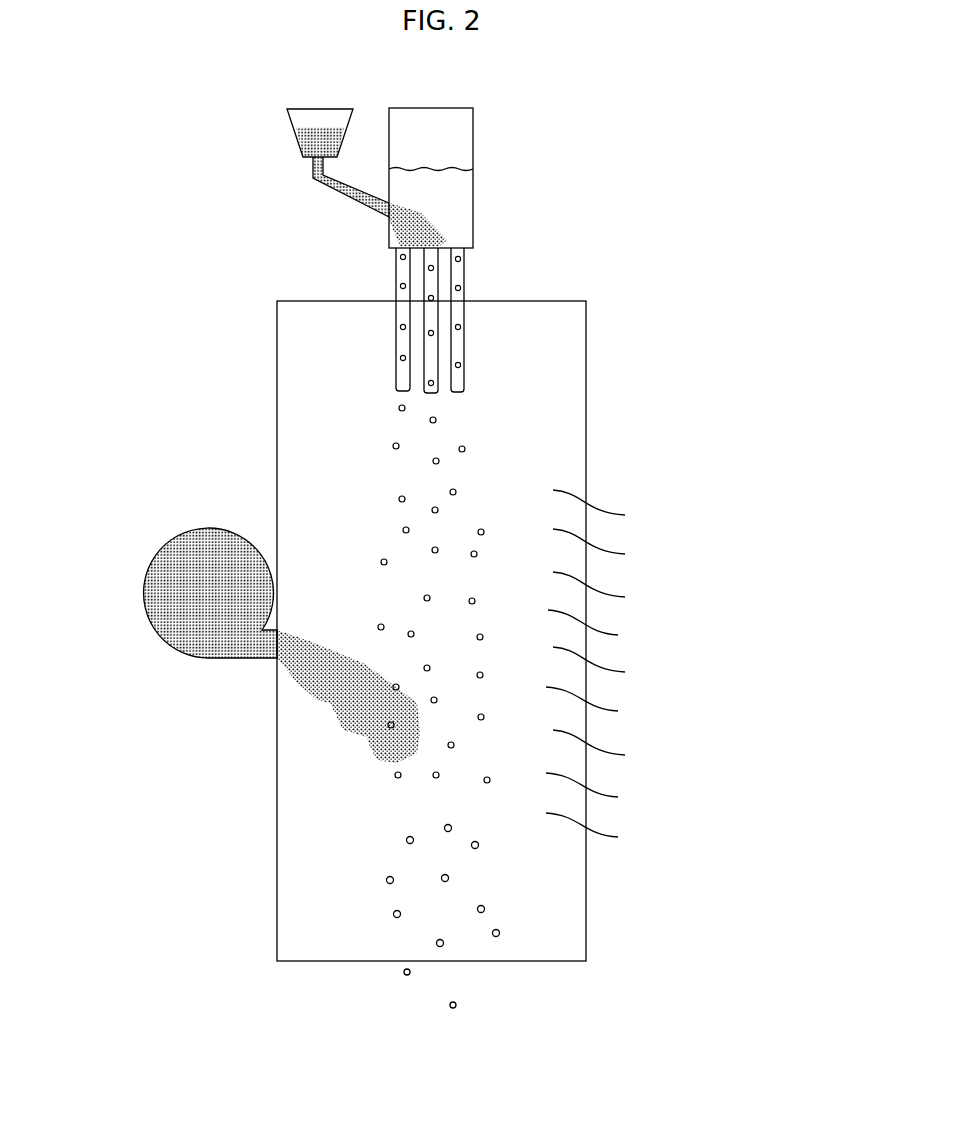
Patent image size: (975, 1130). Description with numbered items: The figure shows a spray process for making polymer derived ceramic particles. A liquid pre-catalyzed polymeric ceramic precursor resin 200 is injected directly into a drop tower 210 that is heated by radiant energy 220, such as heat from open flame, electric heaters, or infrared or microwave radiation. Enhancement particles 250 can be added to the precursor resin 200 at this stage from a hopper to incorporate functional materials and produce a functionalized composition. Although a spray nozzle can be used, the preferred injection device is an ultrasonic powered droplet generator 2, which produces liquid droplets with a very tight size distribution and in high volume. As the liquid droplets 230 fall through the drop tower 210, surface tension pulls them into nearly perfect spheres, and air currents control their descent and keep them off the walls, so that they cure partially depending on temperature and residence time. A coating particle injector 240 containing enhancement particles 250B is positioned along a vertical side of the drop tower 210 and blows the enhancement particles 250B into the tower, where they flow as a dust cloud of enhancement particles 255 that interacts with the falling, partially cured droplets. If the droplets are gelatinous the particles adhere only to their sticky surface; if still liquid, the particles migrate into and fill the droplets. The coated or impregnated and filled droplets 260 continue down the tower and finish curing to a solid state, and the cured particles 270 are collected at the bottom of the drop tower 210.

The ultrasonic powered droplet generator 2 is at (463, 282).
The liquid pre-catalyzed polymeric ceramic precursor resin 200 is at (437, 159).
The drop tower 210 is at (268, 350).
The radiant energy 220 is at (637, 588).
The liquid droplets 230 is at (470, 442).
The coating particle injector 240 is at (172, 530).
The enhancement particles 250 is at (318, 118).
The enhancement particles 250B is at (202, 617).
The dust cloud of enhancement particles 255 is at (368, 670).
The coated or impregnated and filled droplets 260 is at (493, 909).
The cured particles 270 is at (460, 1010).